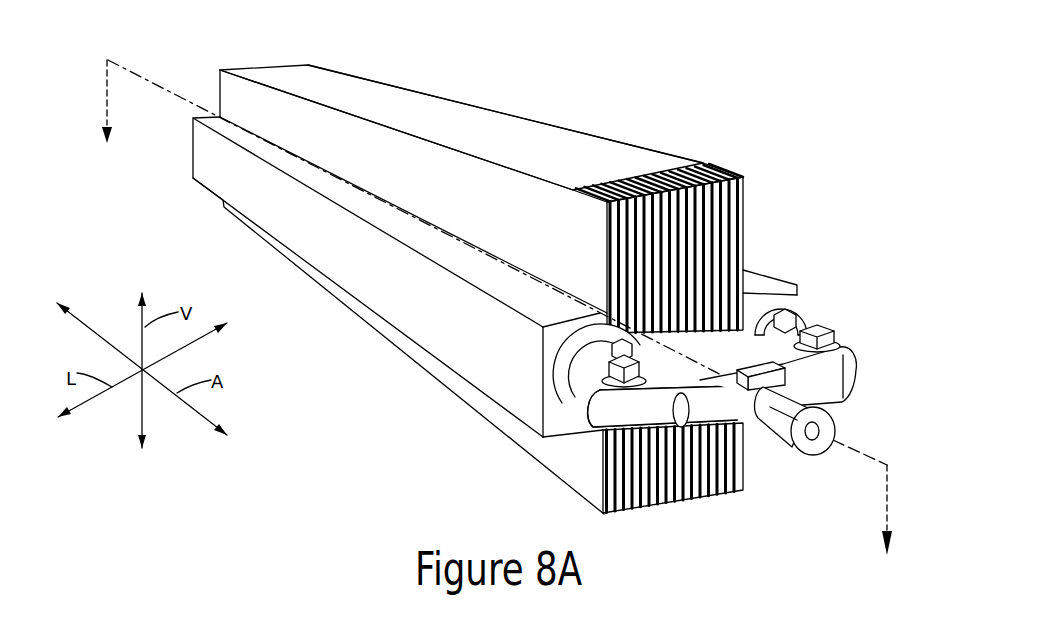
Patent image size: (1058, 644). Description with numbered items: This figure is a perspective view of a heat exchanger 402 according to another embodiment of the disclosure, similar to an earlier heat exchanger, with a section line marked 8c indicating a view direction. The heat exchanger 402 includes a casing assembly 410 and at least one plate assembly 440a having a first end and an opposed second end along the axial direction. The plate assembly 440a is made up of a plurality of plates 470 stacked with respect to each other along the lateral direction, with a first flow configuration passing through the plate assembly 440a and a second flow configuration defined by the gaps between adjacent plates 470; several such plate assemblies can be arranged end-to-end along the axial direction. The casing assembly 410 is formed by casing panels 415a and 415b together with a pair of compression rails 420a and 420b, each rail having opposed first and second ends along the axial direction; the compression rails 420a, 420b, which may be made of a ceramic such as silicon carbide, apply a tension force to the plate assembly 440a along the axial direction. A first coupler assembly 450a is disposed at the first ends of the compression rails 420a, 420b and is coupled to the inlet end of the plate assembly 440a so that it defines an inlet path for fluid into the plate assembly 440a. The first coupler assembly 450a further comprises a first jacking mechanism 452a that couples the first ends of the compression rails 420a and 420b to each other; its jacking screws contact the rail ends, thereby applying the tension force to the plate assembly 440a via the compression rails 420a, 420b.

The heat exchanger 402 is at (548, 78).
The casing assembly 410 is at (461, 163).
The casing panel 415a is at (503, 185).
The casing panel 415b is at (490, 117).
The compression rail 420a is at (433, 317).
The compression rail 420b is at (777, 281).
The plate assembly 440a is at (691, 312).
The first coupler assembly 450a is at (877, 369).
The first jacking mechanism 452a is at (831, 310).
The plates 470 is at (638, 255).
The section view direction 8C 8c is at (100, 95).